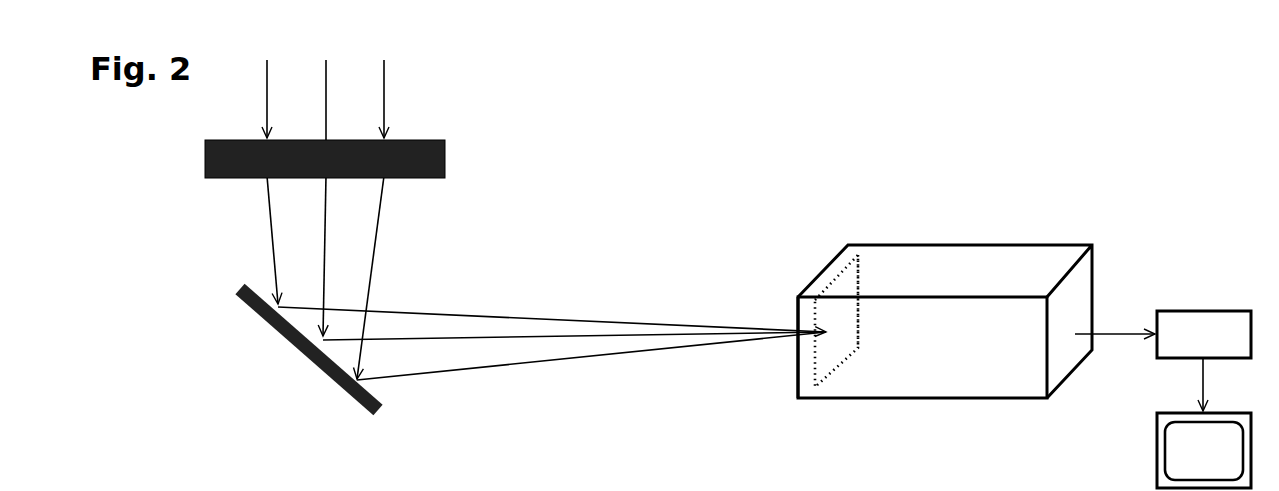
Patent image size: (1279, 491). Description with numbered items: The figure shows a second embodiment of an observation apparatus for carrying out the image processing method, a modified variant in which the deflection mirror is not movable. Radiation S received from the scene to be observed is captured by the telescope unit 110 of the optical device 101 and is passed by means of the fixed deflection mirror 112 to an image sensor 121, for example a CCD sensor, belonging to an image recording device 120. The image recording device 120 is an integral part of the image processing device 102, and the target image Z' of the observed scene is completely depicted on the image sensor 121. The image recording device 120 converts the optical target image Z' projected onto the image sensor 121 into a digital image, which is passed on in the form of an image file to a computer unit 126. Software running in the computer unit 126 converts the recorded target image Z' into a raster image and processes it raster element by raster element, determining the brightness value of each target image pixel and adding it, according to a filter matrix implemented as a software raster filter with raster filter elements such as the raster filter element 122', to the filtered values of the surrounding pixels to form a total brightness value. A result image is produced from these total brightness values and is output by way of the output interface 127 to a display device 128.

The radiation S is at (325, 202).
The optical device 101 is at (263, 403).
The image processing device 102 is at (950, 231).
The telescope unit 110 is at (196, 168).
The deflection mirror 112 is at (244, 288).
The image recording device 120 is at (946, 401).
The image sensor 121 is at (810, 358).
The raster filter element 122' is at (796, 373).
The target image Z' is at (803, 291).
The computer unit 126 is at (1210, 310).
The output interface 127 is at (1198, 380).
The display device 128 is at (1157, 450).